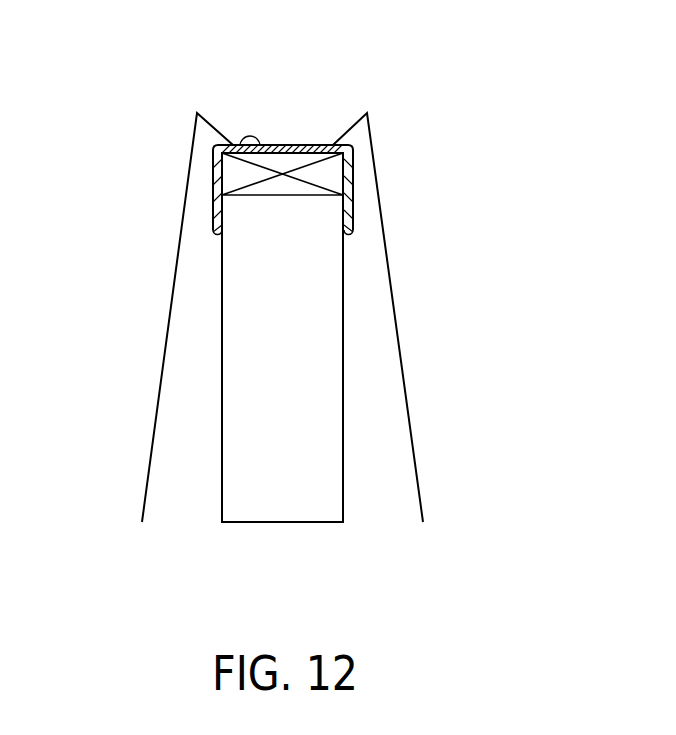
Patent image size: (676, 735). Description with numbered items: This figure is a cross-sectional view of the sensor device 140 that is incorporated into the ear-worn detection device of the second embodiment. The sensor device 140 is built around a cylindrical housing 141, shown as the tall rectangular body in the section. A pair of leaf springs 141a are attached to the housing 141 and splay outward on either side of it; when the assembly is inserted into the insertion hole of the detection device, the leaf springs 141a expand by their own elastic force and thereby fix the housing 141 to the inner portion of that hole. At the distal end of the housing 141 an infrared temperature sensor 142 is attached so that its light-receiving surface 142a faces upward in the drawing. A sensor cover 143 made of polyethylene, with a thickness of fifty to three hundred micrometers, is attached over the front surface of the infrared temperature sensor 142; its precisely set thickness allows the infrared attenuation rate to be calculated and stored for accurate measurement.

The sensor device 140 is at (222, 485).
The housing 141 is at (290, 502).
The leaf springs 141a is at (155, 407).
The infrared temperature sensor 142 is at (287, 168).
The light-receiving surface 142a is at (242, 153).
The sensor cover 143 is at (270, 147).